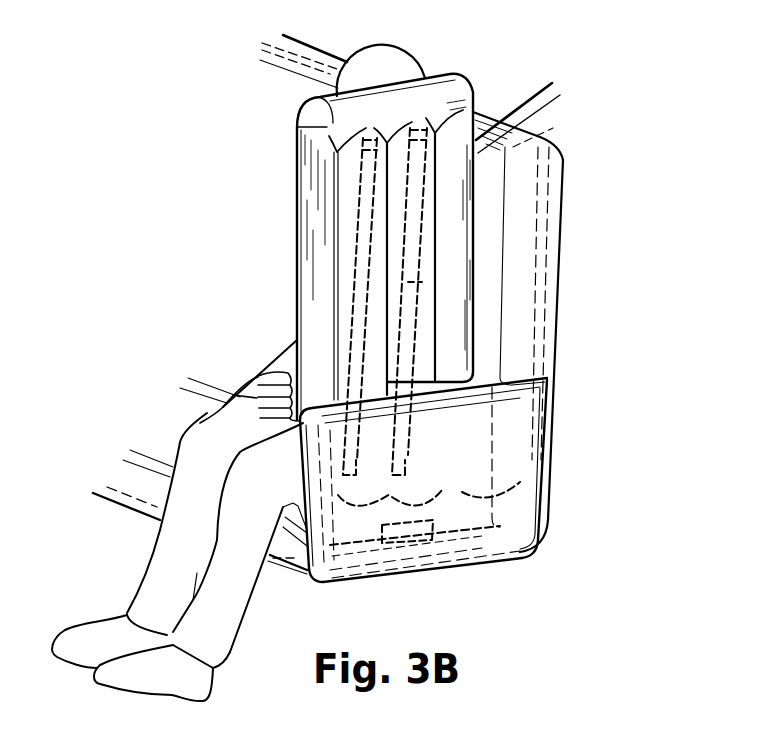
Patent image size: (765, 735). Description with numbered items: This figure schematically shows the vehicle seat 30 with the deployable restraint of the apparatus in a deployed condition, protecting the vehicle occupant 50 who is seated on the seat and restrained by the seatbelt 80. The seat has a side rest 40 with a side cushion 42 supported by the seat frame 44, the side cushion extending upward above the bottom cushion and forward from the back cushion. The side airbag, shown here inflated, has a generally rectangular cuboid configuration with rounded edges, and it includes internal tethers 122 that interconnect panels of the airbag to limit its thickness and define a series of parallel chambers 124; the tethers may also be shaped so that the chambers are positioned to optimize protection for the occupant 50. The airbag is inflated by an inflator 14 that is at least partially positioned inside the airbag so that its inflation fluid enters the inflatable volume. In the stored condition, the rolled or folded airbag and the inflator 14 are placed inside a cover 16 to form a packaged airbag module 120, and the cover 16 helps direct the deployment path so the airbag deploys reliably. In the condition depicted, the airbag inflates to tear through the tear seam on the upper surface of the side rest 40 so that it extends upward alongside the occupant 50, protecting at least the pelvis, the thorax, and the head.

The seatbelt 80 is at (538, 87).
The vehicle seat 30 is at (567, 178).
The chambers 124 is at (458, 192).
The seat frame 44 is at (547, 280).
The tethers 122 is at (415, 282).
The vehicle occupant 50 is at (282, 354).
The side cushion 42 is at (301, 421).
The cover 16 is at (497, 517).
The side rest 40 is at (467, 557).
The inflator 14 is at (428, 543).
The airbag module 120 is at (380, 534).